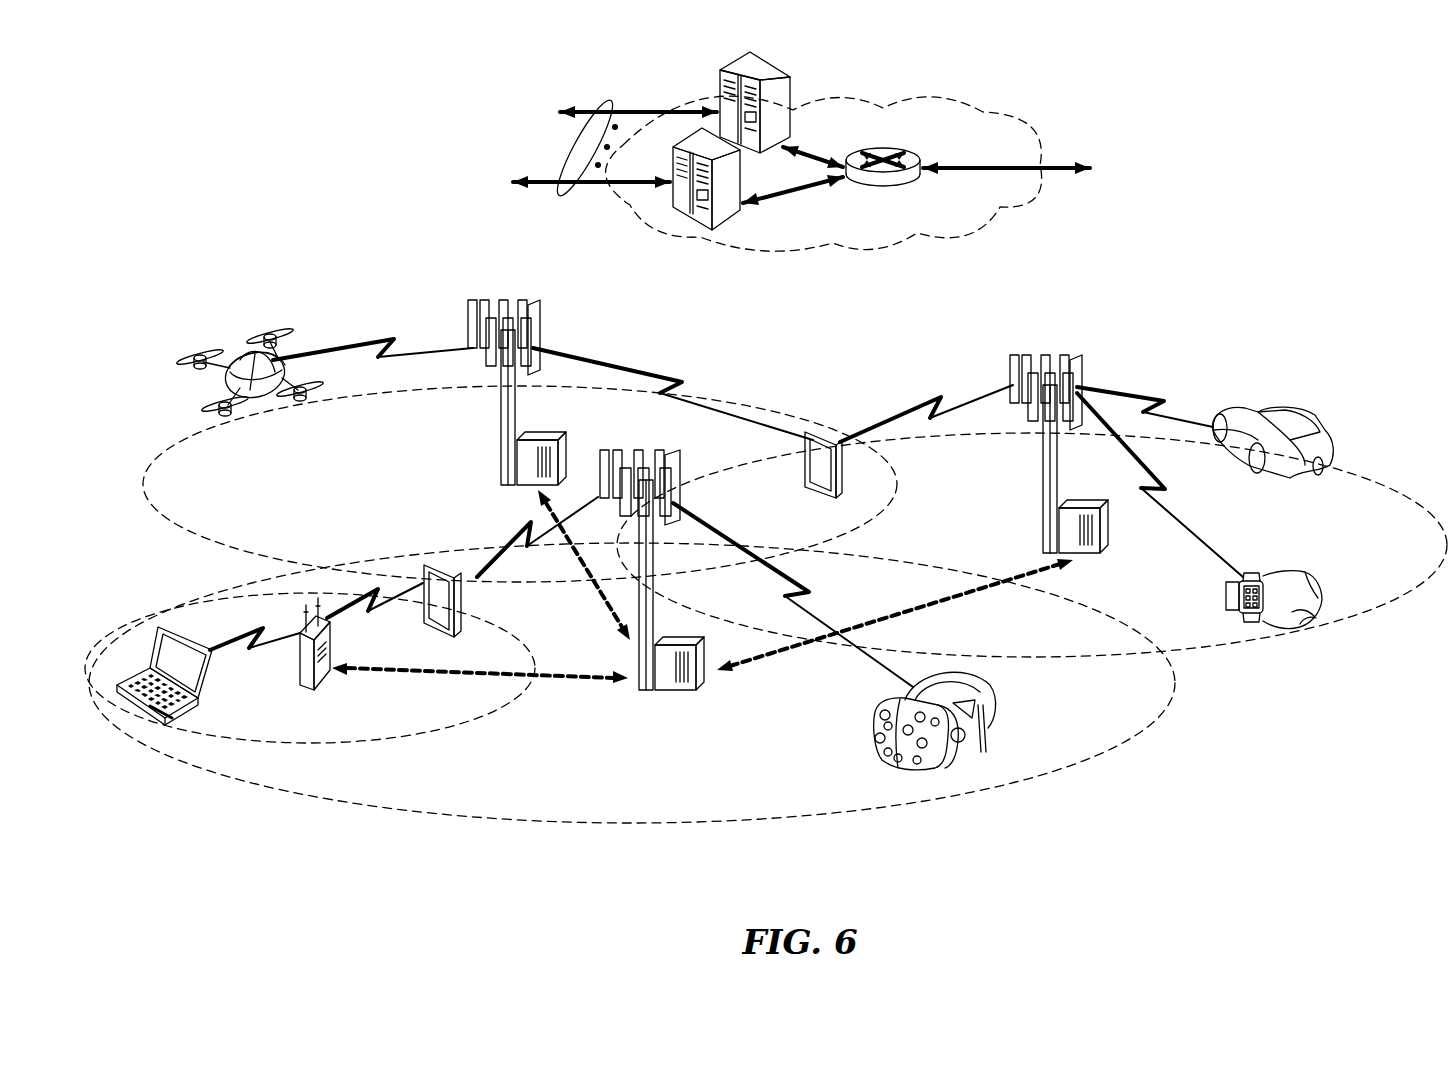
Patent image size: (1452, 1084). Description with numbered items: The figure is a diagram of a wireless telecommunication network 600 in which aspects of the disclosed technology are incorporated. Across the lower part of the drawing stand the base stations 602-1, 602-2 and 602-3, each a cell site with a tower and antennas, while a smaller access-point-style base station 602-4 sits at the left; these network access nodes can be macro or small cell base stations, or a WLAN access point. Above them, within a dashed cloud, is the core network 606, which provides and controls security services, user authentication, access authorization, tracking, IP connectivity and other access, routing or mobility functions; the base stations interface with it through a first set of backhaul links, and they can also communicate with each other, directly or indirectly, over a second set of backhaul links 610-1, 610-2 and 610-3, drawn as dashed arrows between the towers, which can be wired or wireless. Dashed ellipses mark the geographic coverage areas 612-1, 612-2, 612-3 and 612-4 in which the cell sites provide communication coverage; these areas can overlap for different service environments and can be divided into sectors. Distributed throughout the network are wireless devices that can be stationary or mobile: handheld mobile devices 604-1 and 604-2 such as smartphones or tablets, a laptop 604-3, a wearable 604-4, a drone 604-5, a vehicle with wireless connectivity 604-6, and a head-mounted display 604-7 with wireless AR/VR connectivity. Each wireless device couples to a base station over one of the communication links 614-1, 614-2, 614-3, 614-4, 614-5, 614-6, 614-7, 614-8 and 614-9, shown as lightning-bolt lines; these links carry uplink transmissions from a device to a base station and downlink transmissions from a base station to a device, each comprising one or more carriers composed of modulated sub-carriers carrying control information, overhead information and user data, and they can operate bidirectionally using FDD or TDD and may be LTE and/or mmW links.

The wireless telecommunication network 600 is at (1345, 160).
The core network 606 is at (918, 245).
The base station 602-1 is at (638, 692).
The base station 602-2 is at (500, 430).
The base station 602-3 is at (1040, 470).
The base station 602-4 is at (300, 680).
The handheld mobile device 604-1 is at (462, 612).
The handheld mobile device 604-2 is at (800, 466).
The laptop 604-3 is at (145, 722).
The wearable 604-4 is at (1258, 575).
The drone 604-5 is at (258, 398).
The vehicle with wireless connectivity 604-6 is at (1297, 418).
The head-mounted display 604-7 is at (995, 706).
The backhaul link 610-1 is at (375, 680).
The backhaul link 610-2 is at (960, 607).
The backhaul link 610-3 is at (598, 600).
The geographic coverage area 612-1 is at (568, 825).
The geographic coverage area 612-2 is at (440, 747).
The geographic coverage area 612-3 is at (205, 545).
The geographic coverage area 612-4 is at (1360, 468).
The communication link 614-1 is at (812, 598).
The communication link 614-2 is at (525, 545).
The communication link 614-3 is at (240, 652).
The communication link 614-4 is at (372, 620).
The communication link 614-5 is at (383, 343).
The communication link 614-6 is at (675, 385).
The communication link 614-7 is at (928, 400).
The communication link 614-8 is at (1172, 510).
The communication link 614-9 is at (1143, 395).